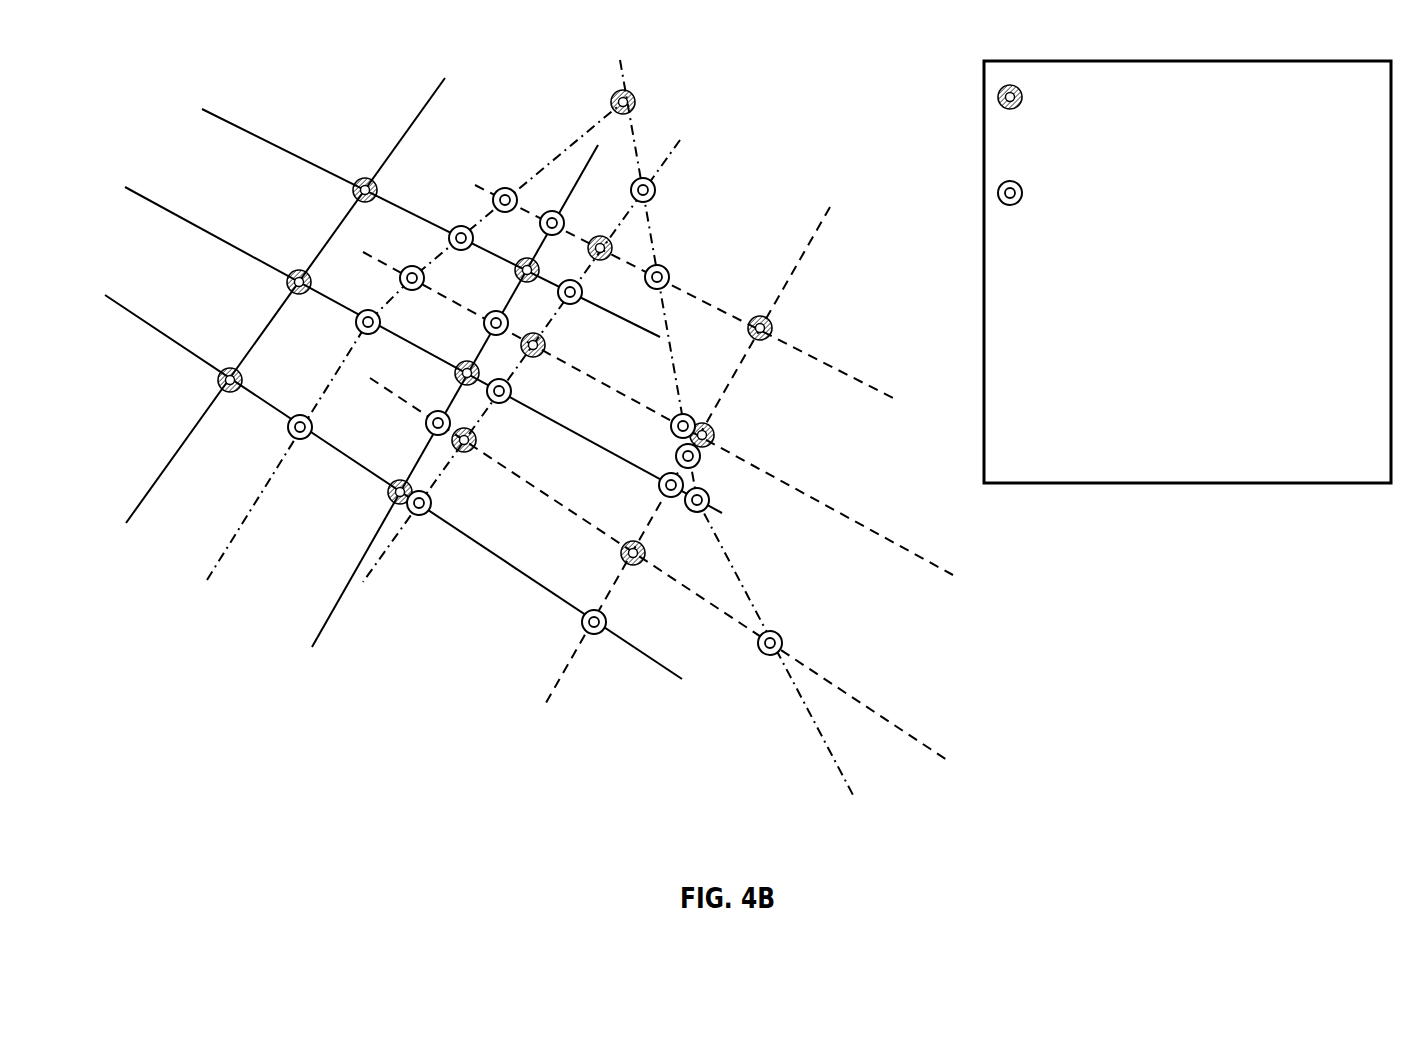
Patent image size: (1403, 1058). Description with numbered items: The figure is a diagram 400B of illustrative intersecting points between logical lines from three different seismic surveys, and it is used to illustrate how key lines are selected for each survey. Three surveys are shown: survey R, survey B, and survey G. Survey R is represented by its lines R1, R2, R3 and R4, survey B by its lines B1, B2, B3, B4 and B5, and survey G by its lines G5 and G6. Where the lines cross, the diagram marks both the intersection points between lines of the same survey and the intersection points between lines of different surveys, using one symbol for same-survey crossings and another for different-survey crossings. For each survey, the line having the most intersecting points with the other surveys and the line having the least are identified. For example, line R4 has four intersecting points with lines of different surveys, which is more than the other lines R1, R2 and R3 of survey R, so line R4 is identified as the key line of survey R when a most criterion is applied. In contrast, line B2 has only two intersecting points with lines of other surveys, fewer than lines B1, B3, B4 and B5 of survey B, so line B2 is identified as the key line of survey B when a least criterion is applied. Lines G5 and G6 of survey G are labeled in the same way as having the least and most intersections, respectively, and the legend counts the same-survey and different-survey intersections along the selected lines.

The intersection diagram of survey lines 400B is at (136, 66).
The survey line R1 is at (441, 416).
The survey line R2 (least intersections) R2 is at (411, 206).
The survey line R3 is at (374, 472).
The line R4 is at (397, 333).
The survey line B1 is at (675, 430).
The line B2 is at (709, 584).
The survey line B3 is at (701, 438).
The survey line B4 (most intersections) B4 is at (556, 341).
The survey line B5 is at (706, 306).
The survey line G5 (least intersections) G5 is at (381, 368).
The survey line G6 (most intersections) G6 is at (776, 457).